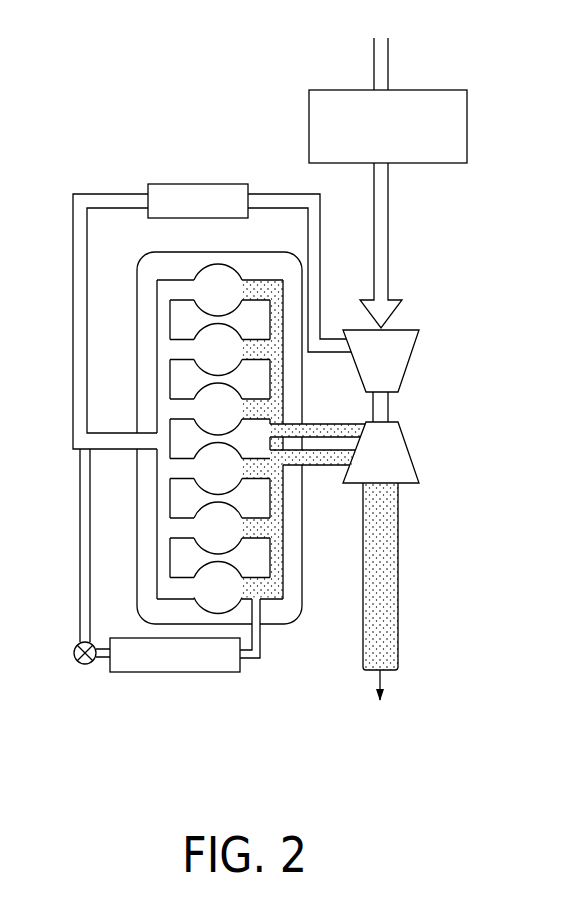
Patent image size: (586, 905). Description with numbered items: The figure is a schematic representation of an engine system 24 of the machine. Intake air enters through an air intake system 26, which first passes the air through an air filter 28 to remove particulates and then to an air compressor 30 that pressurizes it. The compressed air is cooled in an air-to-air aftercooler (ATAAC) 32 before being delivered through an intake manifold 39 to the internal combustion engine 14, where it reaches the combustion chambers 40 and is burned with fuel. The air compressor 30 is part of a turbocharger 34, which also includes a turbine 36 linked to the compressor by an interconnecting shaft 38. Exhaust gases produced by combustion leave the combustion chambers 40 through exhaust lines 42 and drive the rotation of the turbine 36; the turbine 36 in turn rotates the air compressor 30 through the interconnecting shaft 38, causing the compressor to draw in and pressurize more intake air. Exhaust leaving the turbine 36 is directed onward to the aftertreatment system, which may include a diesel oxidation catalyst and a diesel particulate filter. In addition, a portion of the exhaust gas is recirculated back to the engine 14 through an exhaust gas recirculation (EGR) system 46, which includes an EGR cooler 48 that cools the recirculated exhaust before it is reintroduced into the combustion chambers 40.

The engine system 24 is at (118, 88).
The air intake system 26 is at (497, 172).
The air filter 28 is at (410, 89).
The air-to-air aftercooler (ATAAC) 32 is at (198, 184).
The internal combustion engine 14 is at (137, 305).
The intake manifold 39 is at (173, 410).
The combustion chambers 40 is at (217, 316).
The exhaust lines 42 is at (317, 467).
The turbocharger 34 is at (497, 383).
The air compressor 30 is at (412, 363).
The interconnecting shaft 38 is at (390, 407).
The turbine 36 is at (410, 452).
The exhaust gas recirculation (EGR) system 46 is at (118, 718).
The EGR cooler 48 is at (173, 672).